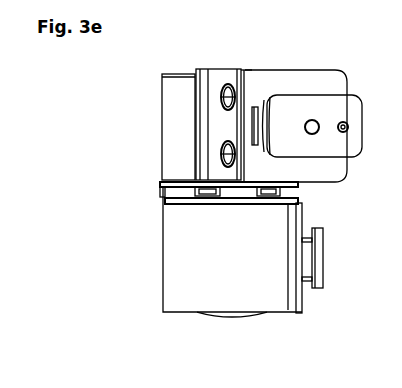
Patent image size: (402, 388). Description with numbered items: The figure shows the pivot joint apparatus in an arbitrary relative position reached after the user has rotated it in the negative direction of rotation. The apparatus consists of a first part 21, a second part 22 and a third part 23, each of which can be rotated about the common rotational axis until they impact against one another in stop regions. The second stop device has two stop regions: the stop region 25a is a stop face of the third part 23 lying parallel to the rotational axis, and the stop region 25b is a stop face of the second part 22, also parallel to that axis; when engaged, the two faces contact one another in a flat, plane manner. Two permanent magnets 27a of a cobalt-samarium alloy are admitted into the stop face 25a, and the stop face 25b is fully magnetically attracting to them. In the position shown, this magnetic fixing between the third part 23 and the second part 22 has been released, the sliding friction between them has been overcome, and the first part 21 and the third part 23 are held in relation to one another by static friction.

The first part 21 is at (303, 305).
The second part 22 is at (162, 168).
The third part 23 is at (331, 72).
The stop region 25a is at (222, 71).
The stop region 25b is at (203, 72).
The permanent magnets 27a is at (252, 84).